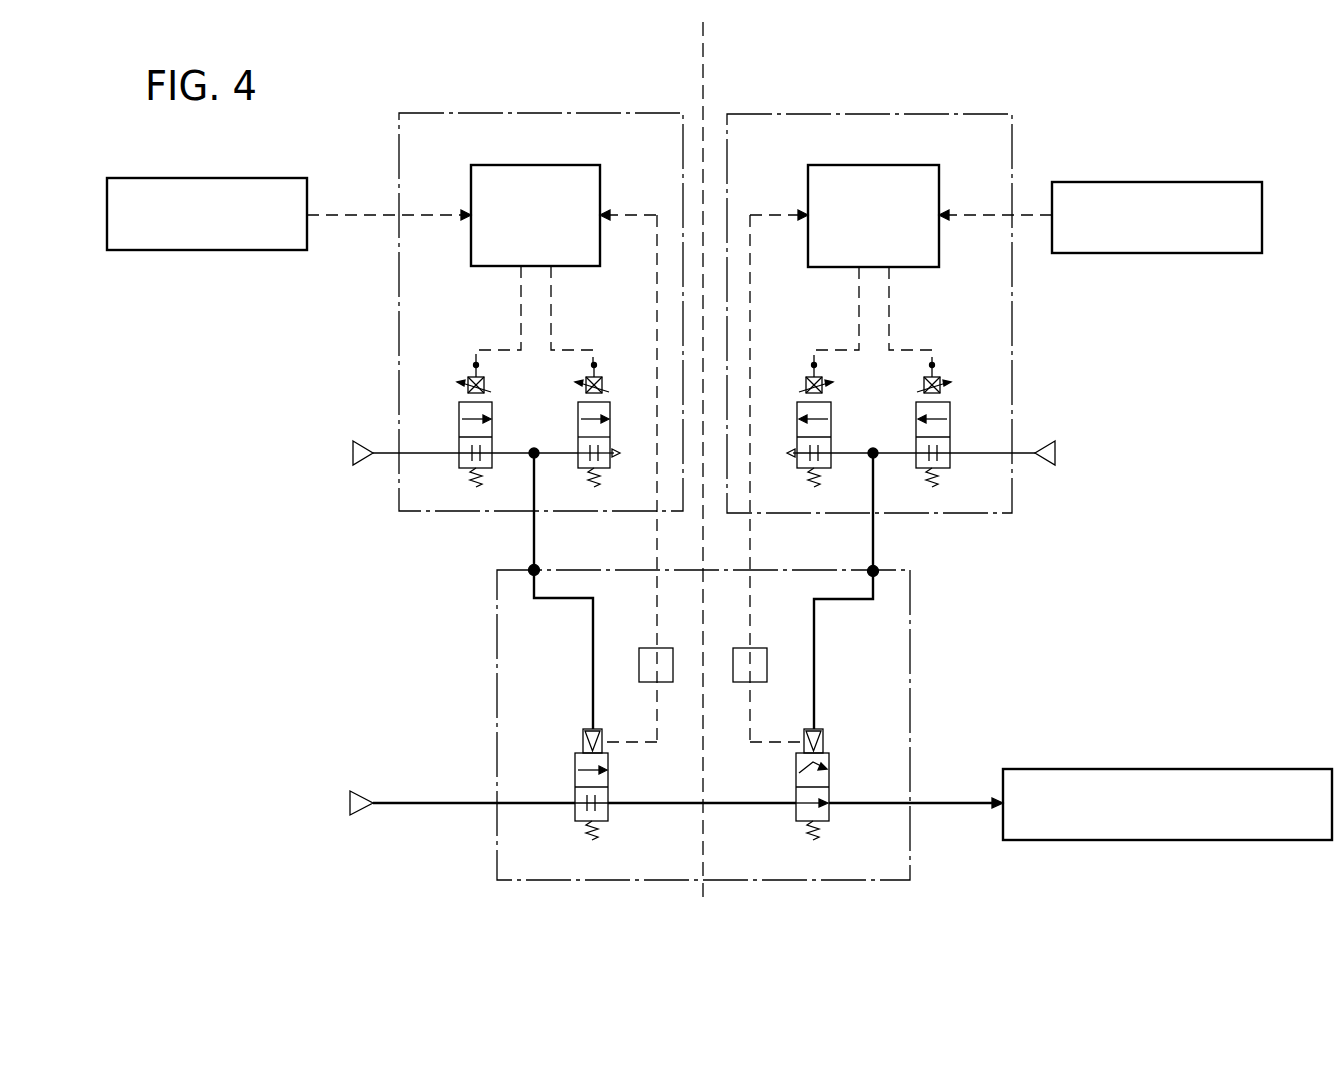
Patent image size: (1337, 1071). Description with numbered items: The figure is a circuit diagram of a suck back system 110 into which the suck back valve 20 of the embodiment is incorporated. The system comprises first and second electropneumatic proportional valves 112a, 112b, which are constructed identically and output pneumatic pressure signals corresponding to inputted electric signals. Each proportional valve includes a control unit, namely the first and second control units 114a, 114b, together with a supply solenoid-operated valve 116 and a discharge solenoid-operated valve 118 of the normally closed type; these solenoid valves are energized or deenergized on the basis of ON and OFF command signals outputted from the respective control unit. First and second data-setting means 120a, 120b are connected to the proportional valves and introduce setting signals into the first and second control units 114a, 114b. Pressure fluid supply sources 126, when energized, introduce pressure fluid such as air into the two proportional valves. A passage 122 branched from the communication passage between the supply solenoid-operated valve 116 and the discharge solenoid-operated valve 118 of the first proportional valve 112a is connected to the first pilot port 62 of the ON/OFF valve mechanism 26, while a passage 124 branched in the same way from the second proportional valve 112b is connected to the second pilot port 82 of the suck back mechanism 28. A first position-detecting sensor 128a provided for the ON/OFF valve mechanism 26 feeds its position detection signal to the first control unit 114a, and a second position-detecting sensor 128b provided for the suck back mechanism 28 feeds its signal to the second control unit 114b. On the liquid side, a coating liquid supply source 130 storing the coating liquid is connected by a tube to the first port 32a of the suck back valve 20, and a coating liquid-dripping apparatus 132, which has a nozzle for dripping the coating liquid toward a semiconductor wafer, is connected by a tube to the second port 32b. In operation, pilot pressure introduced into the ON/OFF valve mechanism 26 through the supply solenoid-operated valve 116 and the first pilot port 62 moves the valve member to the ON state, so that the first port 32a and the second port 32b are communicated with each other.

The suck back system 110 is at (1230, 112).
The first electropneumatic proportional valve 112a is at (533, 106).
The second electropneumatic proportional valve 112b is at (908, 106).
The first control unit 114a is at (569, 165).
The second control unit 114b is at (904, 165).
The supply solenoid-operated valve 116 is at (500, 402).
The discharge solenoid-operated valve 118 is at (638, 387).
The first data-setting means 120a is at (278, 178).
The second data-setting means 120b is at (1230, 182).
The passage 122 is at (534, 548).
The passage 124 is at (873, 548).
The pressure fluid supply source 126 is at (364, 442).
The first position-detecting sensor 128a is at (645, 648).
The second position-detecting sensor 128b is at (774, 636).
The coating liquid supply source 130 is at (363, 795).
The coating liquid-dripping apparatus 132 is at (1304, 770).
The suck back valve 20 is at (910, 642).
The ON/OFF valve mechanism 26 is at (570, 757).
The suck back mechanism 28 is at (836, 757).
The first port 32a is at (492, 803).
The second port 32b is at (911, 803).
The first pilot port 62 is at (540, 567).
The second pilot port 82 is at (868, 567).